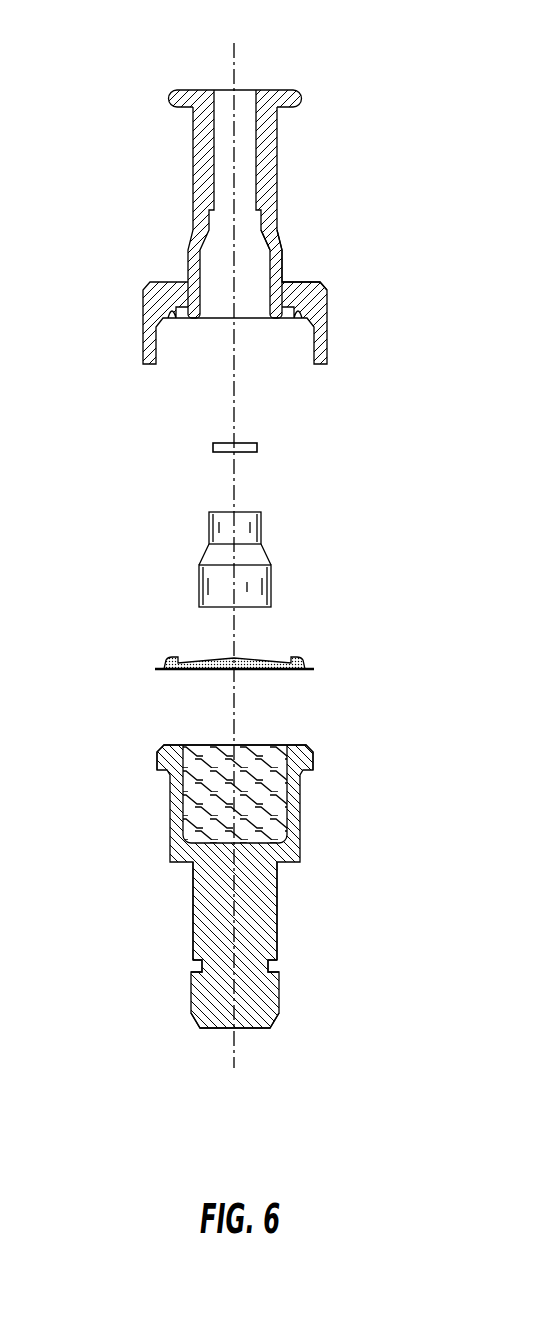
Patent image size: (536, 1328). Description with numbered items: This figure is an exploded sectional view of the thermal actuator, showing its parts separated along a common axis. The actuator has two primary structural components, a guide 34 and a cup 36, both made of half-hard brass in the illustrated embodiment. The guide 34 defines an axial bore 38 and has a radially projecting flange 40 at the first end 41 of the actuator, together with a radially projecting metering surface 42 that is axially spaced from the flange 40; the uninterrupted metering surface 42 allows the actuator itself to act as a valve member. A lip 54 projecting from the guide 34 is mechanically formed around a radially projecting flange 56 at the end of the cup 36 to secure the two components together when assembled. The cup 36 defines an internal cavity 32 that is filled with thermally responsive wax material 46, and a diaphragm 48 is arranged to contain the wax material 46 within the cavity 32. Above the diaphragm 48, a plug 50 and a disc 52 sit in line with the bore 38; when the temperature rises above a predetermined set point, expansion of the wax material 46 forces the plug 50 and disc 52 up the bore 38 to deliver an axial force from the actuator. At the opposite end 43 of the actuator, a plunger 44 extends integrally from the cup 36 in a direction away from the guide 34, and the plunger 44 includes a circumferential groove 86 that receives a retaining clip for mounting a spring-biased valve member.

The internal cavity 32 is at (209, 793).
The guide 34 is at (189, 173).
The cup 36 is at (304, 853).
The axial bore 38 is at (225, 97).
The radially projecting flange 40 is at (302, 99).
The first end 41 is at (268, 96).
The radially projecting metering surface 42 is at (301, 283).
The opposite end 43 is at (241, 1028).
The plunger 44 is at (271, 918).
The thermally responsive wax material 46 is at (281, 795).
The diaphragm 48 is at (159, 668).
The plug 50 is at (197, 589).
The disc 52 is at (210, 448).
The lip 54 is at (331, 346).
The radially projecting flange 56 is at (313, 748).
The circumferential groove 86 is at (268, 966).